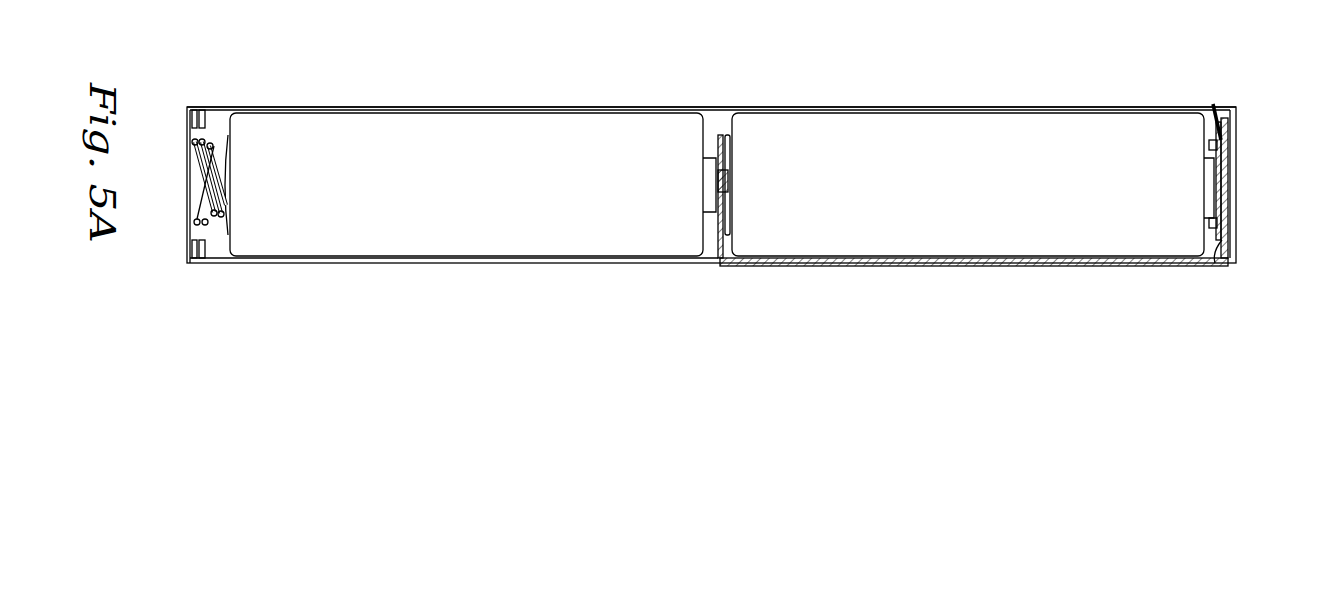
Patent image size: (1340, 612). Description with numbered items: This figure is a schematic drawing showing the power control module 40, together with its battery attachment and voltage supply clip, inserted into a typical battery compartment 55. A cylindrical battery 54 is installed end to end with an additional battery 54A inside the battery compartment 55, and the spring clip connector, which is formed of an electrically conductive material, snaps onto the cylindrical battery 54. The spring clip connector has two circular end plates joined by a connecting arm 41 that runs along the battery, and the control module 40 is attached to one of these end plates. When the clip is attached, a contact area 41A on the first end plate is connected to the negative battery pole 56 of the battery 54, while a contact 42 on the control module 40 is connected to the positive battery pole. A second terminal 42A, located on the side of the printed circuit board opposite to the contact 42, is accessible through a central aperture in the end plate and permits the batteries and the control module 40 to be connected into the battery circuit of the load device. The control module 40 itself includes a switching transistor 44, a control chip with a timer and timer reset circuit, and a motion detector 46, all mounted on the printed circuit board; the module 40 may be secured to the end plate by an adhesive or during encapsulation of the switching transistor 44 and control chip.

The power control module 40 is at (753, 220).
The connecting arm 41 is at (960, 263).
The contact area 41A is at (725, 192).
The contact 42 is at (1225, 167).
The second terminal 42A is at (1225, 190).
The switching transistor 44 is at (205, 212).
The motion detector 46 is at (1225, 207).
The cylindrical battery 54 is at (877, 130).
The additional battery 54A is at (574, 135).
The battery compartment 55 is at (432, 109).
The negative battery pole 56 is at (728, 158).